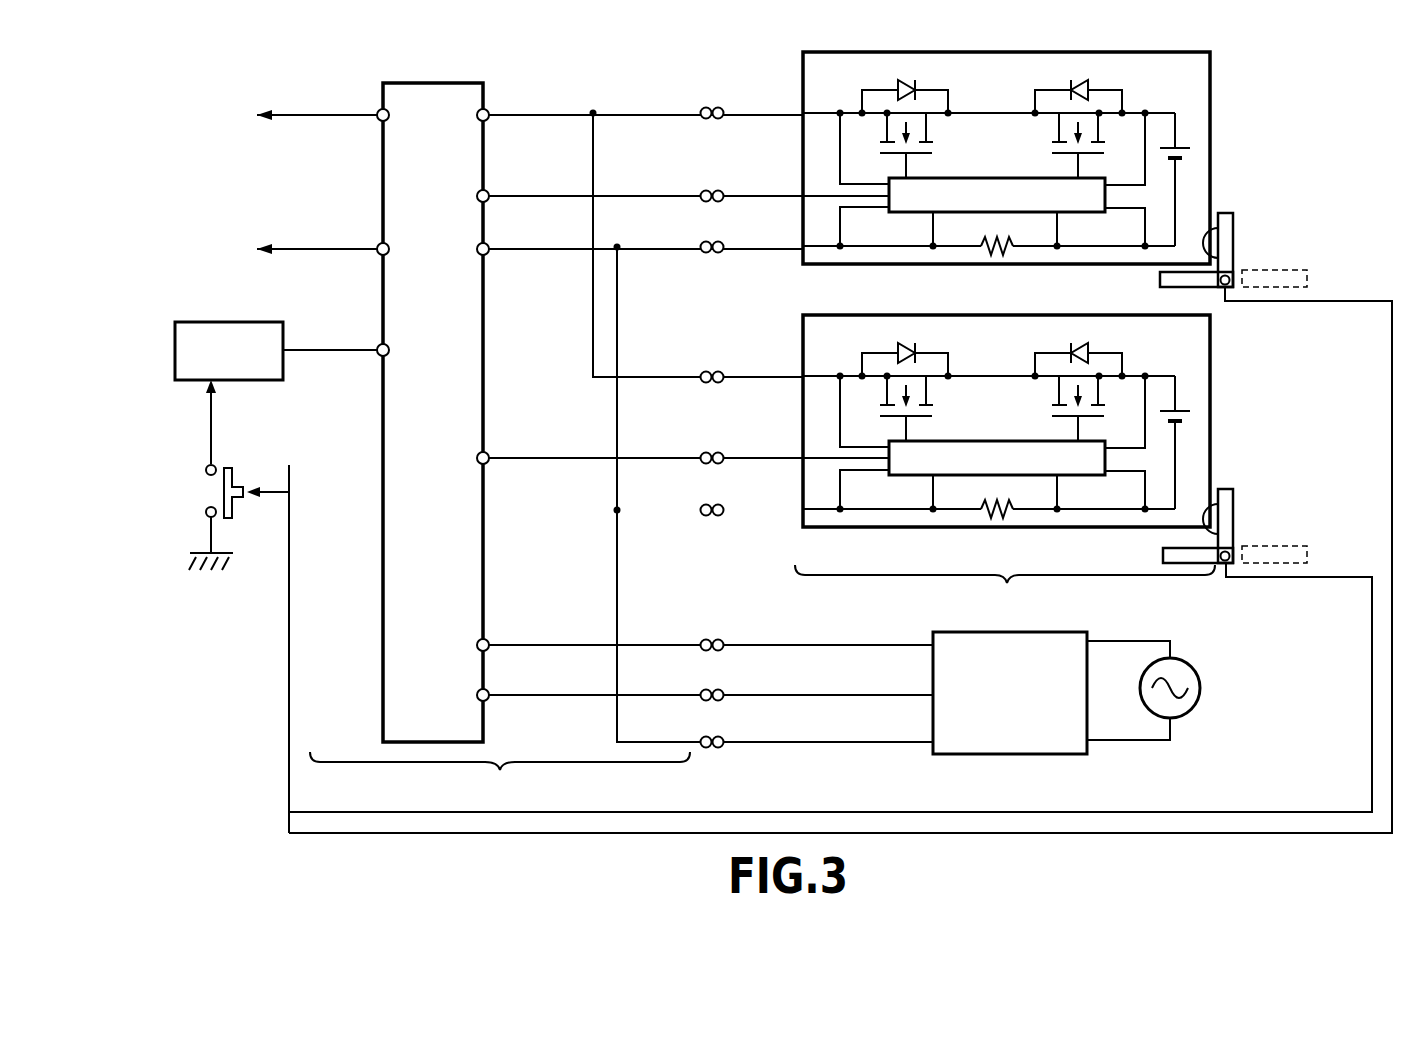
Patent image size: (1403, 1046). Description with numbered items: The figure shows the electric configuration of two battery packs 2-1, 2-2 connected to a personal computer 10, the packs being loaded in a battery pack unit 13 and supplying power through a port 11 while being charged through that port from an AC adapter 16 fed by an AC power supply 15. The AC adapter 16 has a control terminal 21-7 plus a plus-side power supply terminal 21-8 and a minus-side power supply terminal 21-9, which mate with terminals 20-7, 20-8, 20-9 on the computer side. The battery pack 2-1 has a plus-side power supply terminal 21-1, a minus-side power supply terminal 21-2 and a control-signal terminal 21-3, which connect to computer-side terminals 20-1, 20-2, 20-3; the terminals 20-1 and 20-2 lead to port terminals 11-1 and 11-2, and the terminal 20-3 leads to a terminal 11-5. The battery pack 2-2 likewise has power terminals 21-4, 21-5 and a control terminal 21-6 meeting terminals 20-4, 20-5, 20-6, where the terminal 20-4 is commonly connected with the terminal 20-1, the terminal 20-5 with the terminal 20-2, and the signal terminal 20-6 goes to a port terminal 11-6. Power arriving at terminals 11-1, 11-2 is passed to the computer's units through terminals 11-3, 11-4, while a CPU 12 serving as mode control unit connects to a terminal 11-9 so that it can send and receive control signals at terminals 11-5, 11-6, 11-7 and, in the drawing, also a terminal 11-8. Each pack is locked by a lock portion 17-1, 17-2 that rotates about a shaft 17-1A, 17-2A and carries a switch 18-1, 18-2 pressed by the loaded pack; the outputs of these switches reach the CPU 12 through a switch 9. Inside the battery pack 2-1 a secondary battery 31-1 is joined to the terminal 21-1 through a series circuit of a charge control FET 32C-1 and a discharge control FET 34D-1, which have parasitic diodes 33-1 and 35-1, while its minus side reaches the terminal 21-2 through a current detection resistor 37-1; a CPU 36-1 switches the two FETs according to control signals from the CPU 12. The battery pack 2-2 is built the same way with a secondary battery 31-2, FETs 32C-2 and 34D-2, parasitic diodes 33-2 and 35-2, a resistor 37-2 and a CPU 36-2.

The battery pack 2-1 is at (1210, 85).
The battery pack 2-2 is at (1054, 421).
The switch 9 is at (245, 478).
The personal computer 10 is at (500, 777).
The port 11 is at (383, 549).
The terminal 11-1 is at (485, 110).
The terminal 11-2 is at (485, 244).
The terminal 11-3 is at (381, 110).
The terminal 11-4 is at (381, 244).
The terminal 11-5 is at (485, 191).
The terminal 11-6 is at (485, 453).
The terminal 11-7 is at (485, 690).
The terminal 11-8 is at (485, 640).
The terminal 11-9 is at (379, 348).
The CPU 12 is at (215, 322).
The battery pack unit 13 is at (1005, 591).
The AC power supply 15 is at (1191, 664).
The AC adapter 16 is at (1035, 754).
The lock portion 17-1 is at (1233, 228).
The lock portion 17-2 is at (1250, 526).
The shaft 17-1A is at (1235, 270).
The shaft 17-2A is at (1296, 538).
The switch 18-1 is at (1218, 228).
The switch 18-2 is at (1251, 481).
The terminal 20-1 is at (703, 107).
The terminal 20-2 is at (703, 241).
The terminal 20-3 is at (703, 190).
The power supply terminal 20-4 is at (703, 371).
The terminal 20-5 is at (703, 504).
The signal input/output terminal 20-6 is at (703, 452).
The terminal 20-7 is at (703, 689).
The terminal 20-8 is at (703, 639).
The terminal 20-9 is at (703, 736).
The power supply terminal 21-1 is at (721, 107).
The power supply terminal 21-2 is at (721, 241).
The terminal 21-3 is at (721, 190).
The terminal 21-4 is at (721, 371).
The terminal 21-5 is at (721, 504).
The terminal 21-6 is at (721, 452).
The terminal 21-7 is at (721, 689).
The power supply terminal 21-8 is at (721, 639).
The power supply terminal 21-9 is at (721, 736).
The secondary battery 31-1 is at (1188, 147).
The secondary battery 31-2 is at (1232, 442).
The FET 32C-1 is at (1052, 148).
The FET 32C-2 is at (1030, 408).
The parasitic diode 33-1 is at (1090, 88).
The parasitic diode 33-2 is at (1108, 349).
The FET 34D-1 is at (938, 152).
The FET 34D-2 is at (955, 408).
The parasitic diode 35-1 is at (917, 88).
The parasitic diode 35-2 is at (938, 348).
The CPU 36-1 is at (1085, 212).
The CPU 36-2 is at (1002, 502).
The resistor 37-1 is at (985, 255).
The resistor 37-2 is at (941, 532).